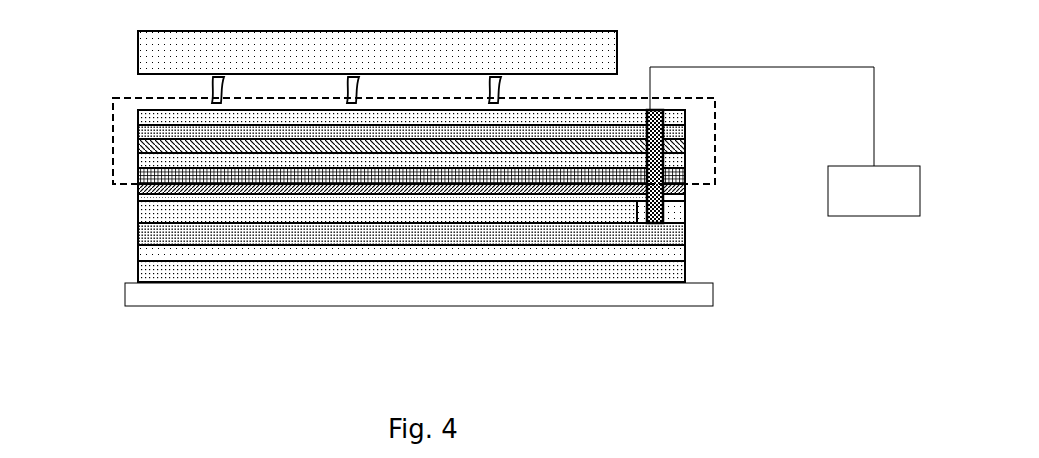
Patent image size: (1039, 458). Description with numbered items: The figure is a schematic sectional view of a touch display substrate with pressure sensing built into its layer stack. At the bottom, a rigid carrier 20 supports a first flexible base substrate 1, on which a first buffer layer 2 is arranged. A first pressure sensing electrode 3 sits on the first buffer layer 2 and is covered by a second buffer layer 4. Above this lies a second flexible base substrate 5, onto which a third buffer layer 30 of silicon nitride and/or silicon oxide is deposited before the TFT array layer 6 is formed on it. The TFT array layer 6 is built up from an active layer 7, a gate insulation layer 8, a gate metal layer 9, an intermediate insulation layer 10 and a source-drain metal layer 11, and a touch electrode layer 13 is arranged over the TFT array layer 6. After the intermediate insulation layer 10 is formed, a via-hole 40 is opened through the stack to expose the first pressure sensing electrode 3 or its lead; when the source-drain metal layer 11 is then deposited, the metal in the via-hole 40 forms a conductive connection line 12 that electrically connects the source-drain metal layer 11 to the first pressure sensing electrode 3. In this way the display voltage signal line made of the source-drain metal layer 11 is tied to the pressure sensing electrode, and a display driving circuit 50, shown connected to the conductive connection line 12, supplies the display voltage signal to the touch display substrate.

The first flexible base substrate 1 is at (686, 278).
The first buffer layer 2 is at (686, 249).
The first pressure sensing electrode 3 is at (686, 232).
The second buffer layer 4 is at (138, 221).
The second flexible base substrate 5 is at (714, 186).
The TFT array layer 6 is at (715, 148).
The active layer 7 is at (137, 179).
The gate insulation layer 8 is at (137, 162).
The gate metal layer 9 is at (137, 143).
The intermediate insulation layer 10 is at (137, 129).
The source-drain metal layer 11 is at (138, 113).
The conductive connection line 12 is at (660, 109).
The touch electrode layer 13 is at (618, 52).
The rigid carrier 20 is at (148, 288).
The third buffer layer 30 is at (138, 188).
The via-hole 40 is at (686, 120).
The display driving circuit 50 is at (873, 217).